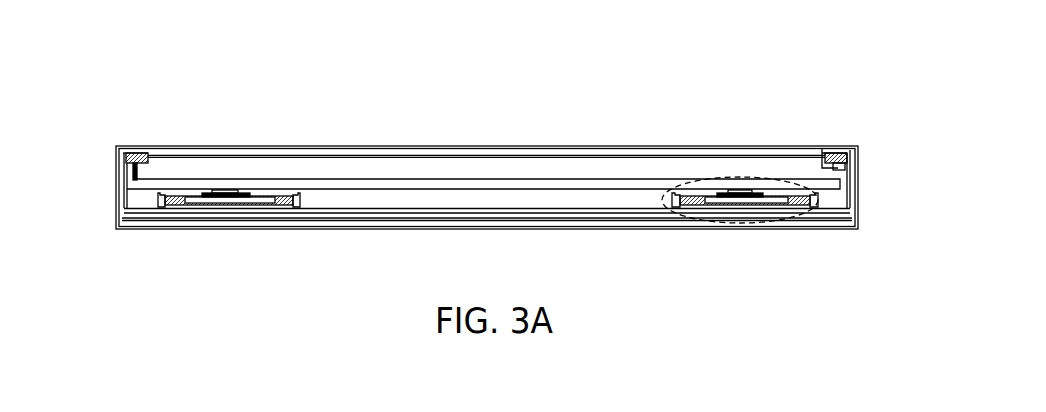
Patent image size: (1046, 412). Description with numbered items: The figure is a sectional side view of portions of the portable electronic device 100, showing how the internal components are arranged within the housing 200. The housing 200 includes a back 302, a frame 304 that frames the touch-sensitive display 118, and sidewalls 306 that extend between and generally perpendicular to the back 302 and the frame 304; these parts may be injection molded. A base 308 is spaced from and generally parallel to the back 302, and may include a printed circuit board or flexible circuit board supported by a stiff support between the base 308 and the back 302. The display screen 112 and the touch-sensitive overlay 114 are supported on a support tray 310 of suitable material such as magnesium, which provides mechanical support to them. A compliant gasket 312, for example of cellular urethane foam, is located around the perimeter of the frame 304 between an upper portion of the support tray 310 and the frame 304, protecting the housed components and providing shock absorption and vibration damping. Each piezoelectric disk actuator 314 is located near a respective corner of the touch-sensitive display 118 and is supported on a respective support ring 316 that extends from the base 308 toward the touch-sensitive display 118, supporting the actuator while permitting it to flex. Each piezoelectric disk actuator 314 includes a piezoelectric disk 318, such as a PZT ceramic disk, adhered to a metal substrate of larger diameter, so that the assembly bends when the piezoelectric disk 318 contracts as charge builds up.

The portable electronic device 100 is at (669, 54).
The touch-sensitive display 118 is at (230, 142).
The housing 200 is at (129, 233).
The display screen 112 is at (397, 155).
The touch-sensitive overlay 114 is at (463, 157).
The back 302 is at (550, 218).
The frame 304 is at (138, 152).
The sidewalls 306 is at (858, 213).
The base 308 is at (328, 212).
The support tray 310 is at (841, 171).
The compliant gasket 312 is at (833, 152).
The piezoelectric disk actuator 314 is at (752, 206).
The support ring 316 is at (160, 203).
The piezoelectric disk 318 is at (178, 204).